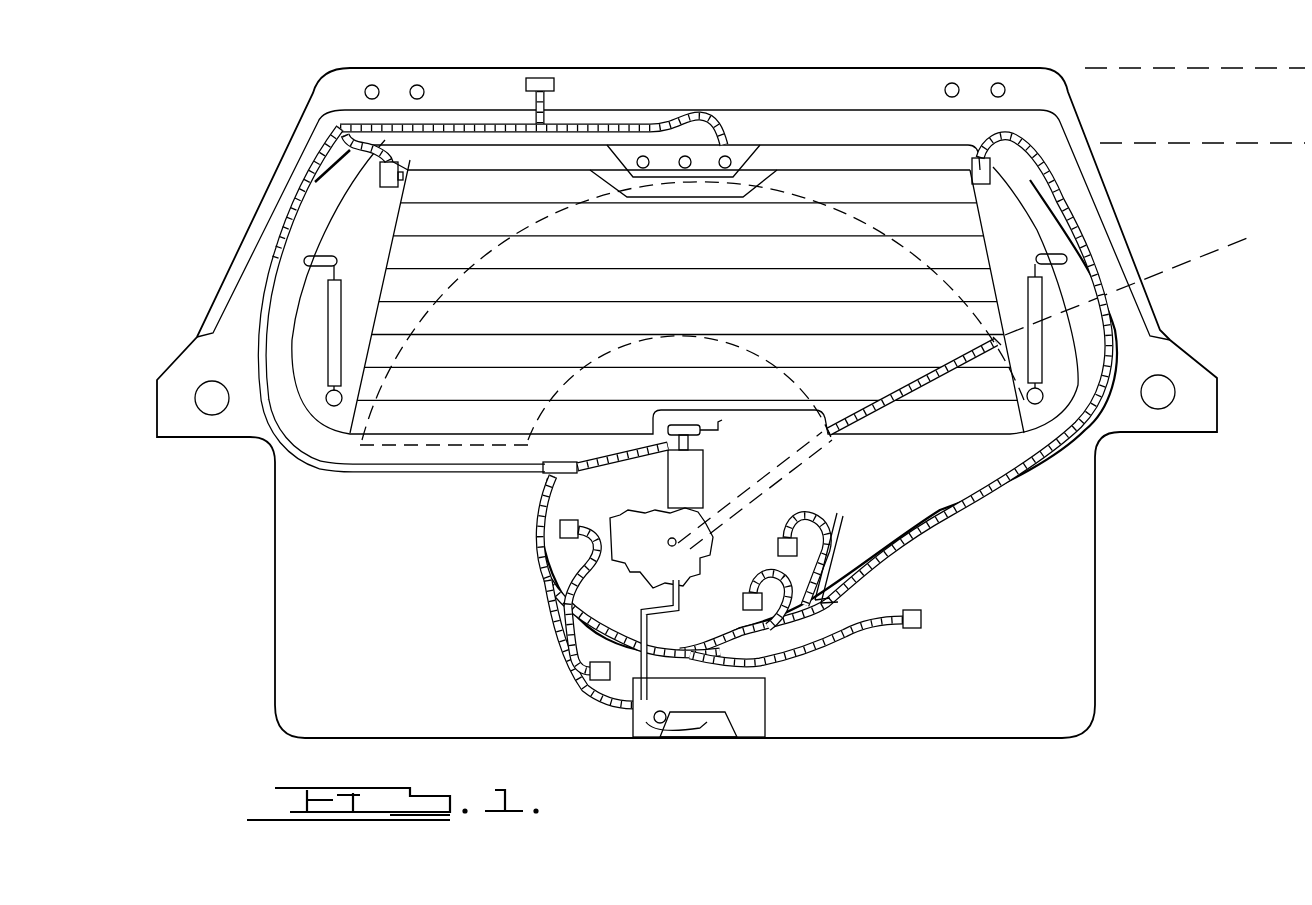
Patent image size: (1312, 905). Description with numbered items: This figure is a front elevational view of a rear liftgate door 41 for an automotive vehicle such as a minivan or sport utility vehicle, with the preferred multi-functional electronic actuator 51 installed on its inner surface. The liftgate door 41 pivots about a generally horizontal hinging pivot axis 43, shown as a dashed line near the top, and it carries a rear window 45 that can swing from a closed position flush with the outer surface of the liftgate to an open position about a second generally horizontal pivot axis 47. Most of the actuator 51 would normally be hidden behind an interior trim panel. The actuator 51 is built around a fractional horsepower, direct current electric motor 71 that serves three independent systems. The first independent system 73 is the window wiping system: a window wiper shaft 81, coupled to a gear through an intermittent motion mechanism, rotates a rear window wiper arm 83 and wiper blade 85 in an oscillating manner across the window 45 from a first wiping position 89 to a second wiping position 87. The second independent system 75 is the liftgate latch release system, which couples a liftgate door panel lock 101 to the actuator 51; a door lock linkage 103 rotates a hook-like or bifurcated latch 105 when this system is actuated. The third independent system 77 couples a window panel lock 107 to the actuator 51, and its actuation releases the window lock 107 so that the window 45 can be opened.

The rear liftgate door 41 is at (287, 682).
The hinging pivot axis 43 is at (1190, 70).
The rear window 45 is at (455, 252).
The pivot axis 47 is at (1205, 145).
The multi-functional electronic actuator 51 is at (587, 508).
The electric motor 71 is at (705, 472).
The first independent system 73 is at (836, 486).
The second independent system 75 is at (705, 625).
The third independent system 77 is at (692, 402).
The window wiper shaft 81 is at (670, 538).
The rear window wiper arm 83 is at (872, 397).
The wiper blade 85 is at (977, 357).
The second wiping position 87 is at (1250, 240).
The first wiping position 89 is at (387, 448).
The liftgate door panel lock 101 is at (637, 713).
The door lock linkage 103 is at (653, 663).
The latch 105 is at (647, 740).
The window panel lock 107 is at (725, 424).